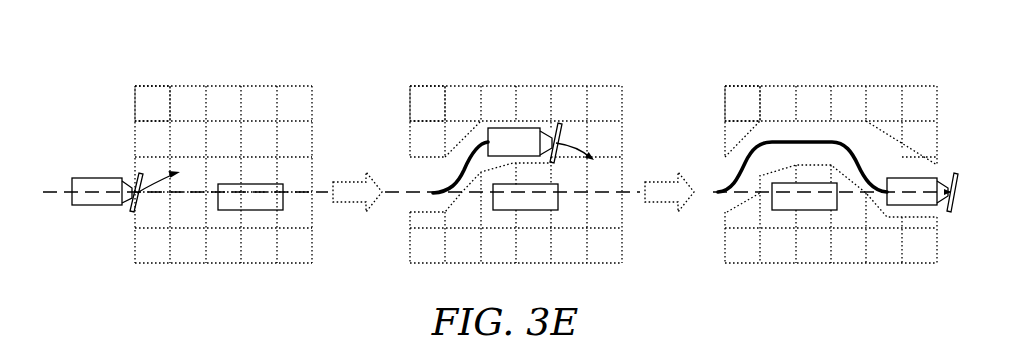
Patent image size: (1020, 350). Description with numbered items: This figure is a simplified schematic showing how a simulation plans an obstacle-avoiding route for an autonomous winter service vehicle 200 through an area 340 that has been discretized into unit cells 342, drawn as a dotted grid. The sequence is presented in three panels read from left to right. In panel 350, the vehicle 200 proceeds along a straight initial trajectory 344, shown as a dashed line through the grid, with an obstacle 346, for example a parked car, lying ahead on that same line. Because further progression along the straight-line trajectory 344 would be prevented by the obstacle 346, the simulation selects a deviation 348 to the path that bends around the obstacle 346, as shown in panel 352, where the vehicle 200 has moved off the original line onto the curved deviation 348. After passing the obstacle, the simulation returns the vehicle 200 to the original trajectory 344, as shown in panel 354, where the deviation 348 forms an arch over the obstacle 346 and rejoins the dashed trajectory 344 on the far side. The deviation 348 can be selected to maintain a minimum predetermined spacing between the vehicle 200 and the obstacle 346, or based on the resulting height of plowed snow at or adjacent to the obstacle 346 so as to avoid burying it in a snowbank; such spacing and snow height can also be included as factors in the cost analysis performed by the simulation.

The winter service vehicle 200 is at (97, 178).
The area 340 is at (135, 86).
The unit cells 342 is at (150, 96).
The initial trajectory 344 is at (52, 196).
The obstacle 346 is at (250, 212).
The deviation 348 is at (458, 192).
The panel 350 is at (310, 64).
The panel 352 is at (617, 64).
The panel 354 is at (920, 64).